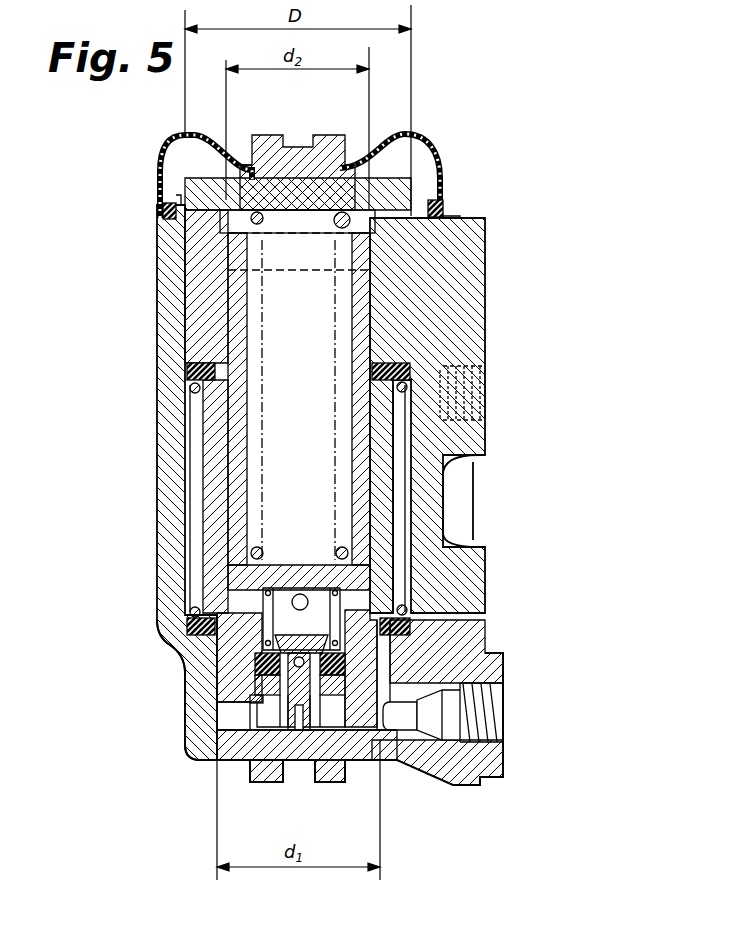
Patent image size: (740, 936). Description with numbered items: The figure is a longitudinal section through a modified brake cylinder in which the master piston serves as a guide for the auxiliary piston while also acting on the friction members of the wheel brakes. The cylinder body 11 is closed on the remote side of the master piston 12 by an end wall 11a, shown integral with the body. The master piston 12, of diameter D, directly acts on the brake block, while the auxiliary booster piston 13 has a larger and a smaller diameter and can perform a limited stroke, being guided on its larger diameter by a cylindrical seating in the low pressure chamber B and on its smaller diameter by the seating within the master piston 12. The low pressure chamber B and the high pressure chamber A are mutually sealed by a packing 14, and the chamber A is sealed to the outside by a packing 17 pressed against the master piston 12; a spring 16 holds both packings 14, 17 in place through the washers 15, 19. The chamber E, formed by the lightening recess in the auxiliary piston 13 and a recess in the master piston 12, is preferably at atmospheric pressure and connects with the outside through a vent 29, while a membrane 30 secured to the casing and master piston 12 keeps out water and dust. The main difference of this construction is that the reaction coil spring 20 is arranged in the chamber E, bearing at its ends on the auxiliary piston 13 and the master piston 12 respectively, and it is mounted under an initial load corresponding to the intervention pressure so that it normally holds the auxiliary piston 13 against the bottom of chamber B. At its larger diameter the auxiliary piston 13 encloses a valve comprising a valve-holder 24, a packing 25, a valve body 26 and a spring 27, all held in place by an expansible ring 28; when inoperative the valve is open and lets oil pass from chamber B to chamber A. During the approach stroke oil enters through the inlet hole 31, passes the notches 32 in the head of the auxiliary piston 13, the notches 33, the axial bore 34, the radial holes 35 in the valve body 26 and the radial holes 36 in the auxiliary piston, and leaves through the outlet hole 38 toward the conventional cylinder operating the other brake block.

The cylinder body 11 is at (453, 243).
The end wall 11a is at (247, 762).
The master piston 12 is at (397, 277).
The auxiliary booster piston 13 is at (245, 320).
The packing 14 is at (405, 655).
The washer 15 is at (417, 633).
The spring 16 is at (403, 510).
The packing 17 is at (393, 357).
The washer 19 is at (440, 373).
The coil spring 20 is at (258, 415).
The valve-holder 24 is at (257, 680).
The packing 25 is at (253, 665).
The valve body 26 is at (262, 648).
The spring 27 is at (235, 613).
The expansible ring 28 is at (252, 703).
The vent 29 is at (228, 197).
The membrane 30 is at (167, 208).
The inlet hole 31 is at (400, 715).
The notches 32 is at (373, 727).
The notches 33 is at (317, 720).
The axial bore 34 is at (260, 750).
The radial holes 35 is at (500, 665).
The radial holes 36 is at (355, 600).
The outlet hole 38 is at (385, 400).
The high pressure chamber A is at (387, 480).
The low pressure chamber B is at (380, 730).
The atmospheric chamber E is at (295, 352).